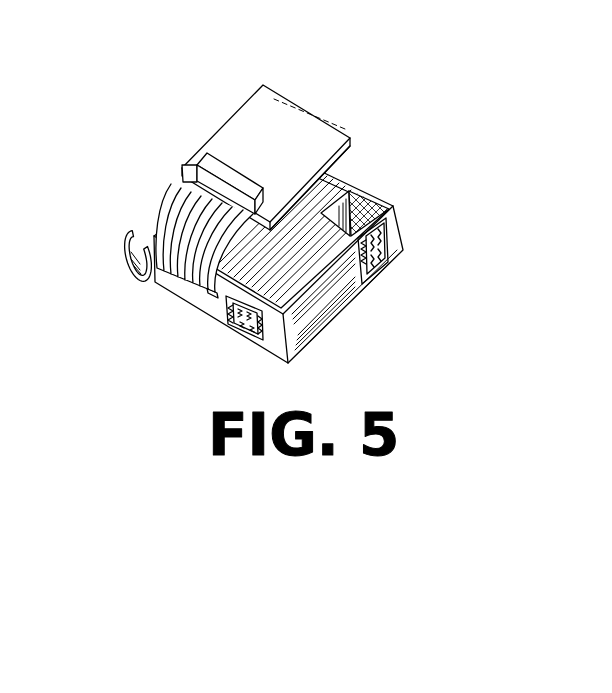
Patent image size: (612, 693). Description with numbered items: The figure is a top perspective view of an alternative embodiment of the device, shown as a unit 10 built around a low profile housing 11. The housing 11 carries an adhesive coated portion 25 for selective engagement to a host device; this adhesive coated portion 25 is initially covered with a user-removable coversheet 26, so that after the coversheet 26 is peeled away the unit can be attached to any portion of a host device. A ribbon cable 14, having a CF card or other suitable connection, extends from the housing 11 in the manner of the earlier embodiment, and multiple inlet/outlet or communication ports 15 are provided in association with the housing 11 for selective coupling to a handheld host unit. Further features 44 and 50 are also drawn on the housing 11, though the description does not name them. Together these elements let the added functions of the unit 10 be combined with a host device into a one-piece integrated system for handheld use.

The unit 10 is at (147, 311).
The low profile housing 11 is at (328, 311).
The ribbon cable 14 is at (192, 213).
The communication ports 15 is at (276, 118).
The adhesive coated portion 25 is at (368, 197).
The user-removable coversheet 26 is at (337, 206).
The ribbon cable conductors 44 is at (178, 191).
The socket connector 50 is at (243, 325).